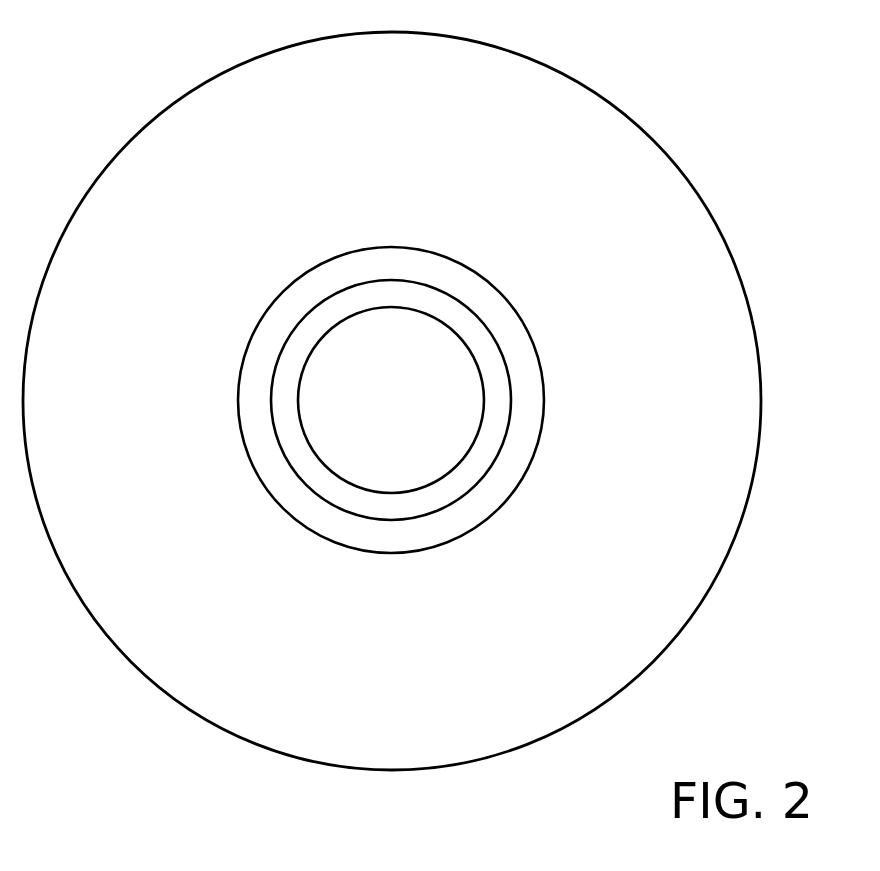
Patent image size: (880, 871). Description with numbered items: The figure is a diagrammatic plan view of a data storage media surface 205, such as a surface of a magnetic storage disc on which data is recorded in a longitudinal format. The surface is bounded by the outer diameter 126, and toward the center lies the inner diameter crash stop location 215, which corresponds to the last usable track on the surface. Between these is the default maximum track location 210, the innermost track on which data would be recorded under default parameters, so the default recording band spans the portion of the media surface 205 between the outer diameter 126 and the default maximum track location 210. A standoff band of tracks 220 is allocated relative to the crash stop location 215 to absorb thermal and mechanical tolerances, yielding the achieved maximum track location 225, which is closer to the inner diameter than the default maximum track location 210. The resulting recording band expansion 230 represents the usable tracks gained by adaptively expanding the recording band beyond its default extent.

The outer diameter 126 is at (540, 62).
The data storage media surface 205 is at (413, 398).
The default maximum track location 210 is at (483, 522).
The inner diameter crash stop location 215 is at (480, 433).
The standoff band of tracks 220 is at (381, 400).
The achieved maximum track location 225 is at (277, 438).
The recording band expansion 230 is at (446, 444).